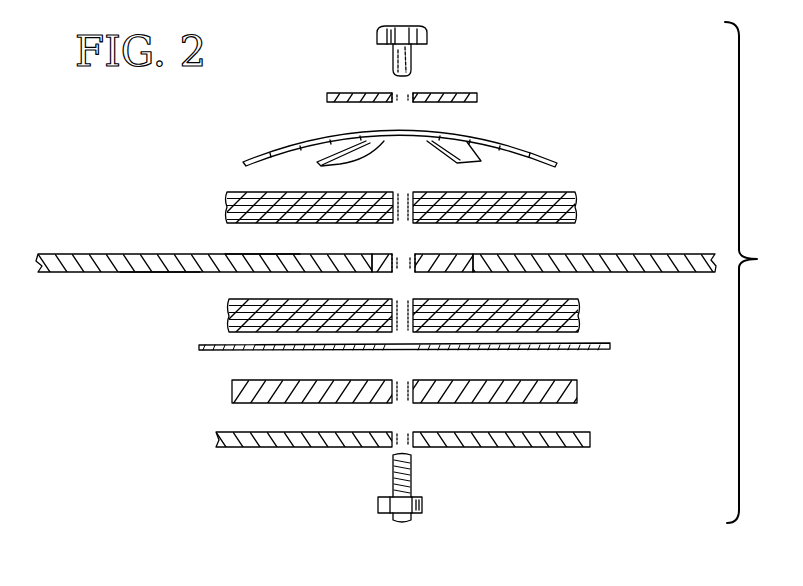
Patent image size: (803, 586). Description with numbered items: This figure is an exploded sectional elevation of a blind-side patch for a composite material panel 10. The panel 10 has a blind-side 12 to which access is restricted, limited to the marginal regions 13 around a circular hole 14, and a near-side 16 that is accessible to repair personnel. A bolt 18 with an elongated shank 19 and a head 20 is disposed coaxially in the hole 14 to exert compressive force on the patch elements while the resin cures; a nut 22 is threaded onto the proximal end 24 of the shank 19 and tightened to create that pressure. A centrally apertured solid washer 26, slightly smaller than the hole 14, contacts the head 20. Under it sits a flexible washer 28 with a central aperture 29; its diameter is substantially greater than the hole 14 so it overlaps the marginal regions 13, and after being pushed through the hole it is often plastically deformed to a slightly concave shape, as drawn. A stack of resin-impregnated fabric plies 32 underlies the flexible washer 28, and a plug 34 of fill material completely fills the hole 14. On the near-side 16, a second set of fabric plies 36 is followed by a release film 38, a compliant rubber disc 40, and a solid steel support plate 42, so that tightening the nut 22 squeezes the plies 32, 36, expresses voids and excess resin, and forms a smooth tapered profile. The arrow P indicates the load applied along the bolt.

The composite material panel 10 is at (72, 243).
The blind-side 12 is at (148, 253).
The marginal regions 13 is at (250, 240).
The hole 14 is at (327, 260).
The near-side 16 is at (140, 273).
The bolt 18 is at (428, 54).
The shank 19 is at (393, 470).
The head 20 is at (423, 28).
The nut 22 is at (423, 504).
The proximal end 24 is at (402, 522).
The solid washer 26 is at (477, 97).
The flexible washer 28 is at (542, 157).
The central aperture 29 is at (400, 142).
The fabric plies 32 is at (575, 199).
The plug 34 is at (467, 255).
The second set of fabric plies 36 is at (578, 304).
The release film 38 is at (610, 346).
The disc 40 is at (578, 392).
The support plate 42 is at (590, 437).
The preload force P is at (333, 78).